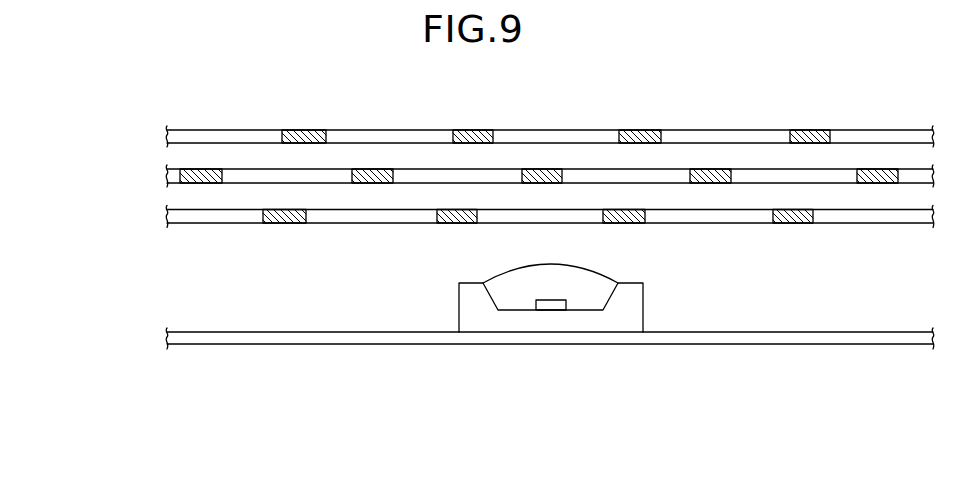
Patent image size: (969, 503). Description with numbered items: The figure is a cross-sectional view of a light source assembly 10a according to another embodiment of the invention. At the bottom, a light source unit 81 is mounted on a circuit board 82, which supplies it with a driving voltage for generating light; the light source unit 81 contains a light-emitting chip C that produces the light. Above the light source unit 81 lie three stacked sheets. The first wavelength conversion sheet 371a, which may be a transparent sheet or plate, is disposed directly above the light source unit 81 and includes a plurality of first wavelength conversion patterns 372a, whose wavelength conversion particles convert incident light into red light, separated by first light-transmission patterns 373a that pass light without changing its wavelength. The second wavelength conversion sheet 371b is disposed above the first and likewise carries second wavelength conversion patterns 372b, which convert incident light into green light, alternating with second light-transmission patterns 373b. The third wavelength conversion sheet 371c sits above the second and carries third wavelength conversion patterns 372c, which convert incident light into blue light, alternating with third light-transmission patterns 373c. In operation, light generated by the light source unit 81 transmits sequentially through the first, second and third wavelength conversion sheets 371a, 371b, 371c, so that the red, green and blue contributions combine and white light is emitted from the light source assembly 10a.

The third wavelength conversion sheet 371c is at (90, 89).
The third wavelength conversion patterns 372c is at (280, 137).
The third light-transmission patterns 373c is at (202, 135).
The second wavelength conversion sheet 371b is at (95, 182).
The second wavelength conversion patterns 372b is at (192, 182).
The second light-transmission patterns 373b is at (240, 177).
The first wavelength conversion sheet 371a is at (95, 256).
The first wavelength conversion patterns 372a is at (278, 220).
The first light-transmission patterns 373a is at (330, 216).
The light source unit 81 is at (480, 312).
The circuit board 82 is at (518, 338).
The light-emitting chip C is at (548, 305).
The light source assembly 10a is at (284, 389).